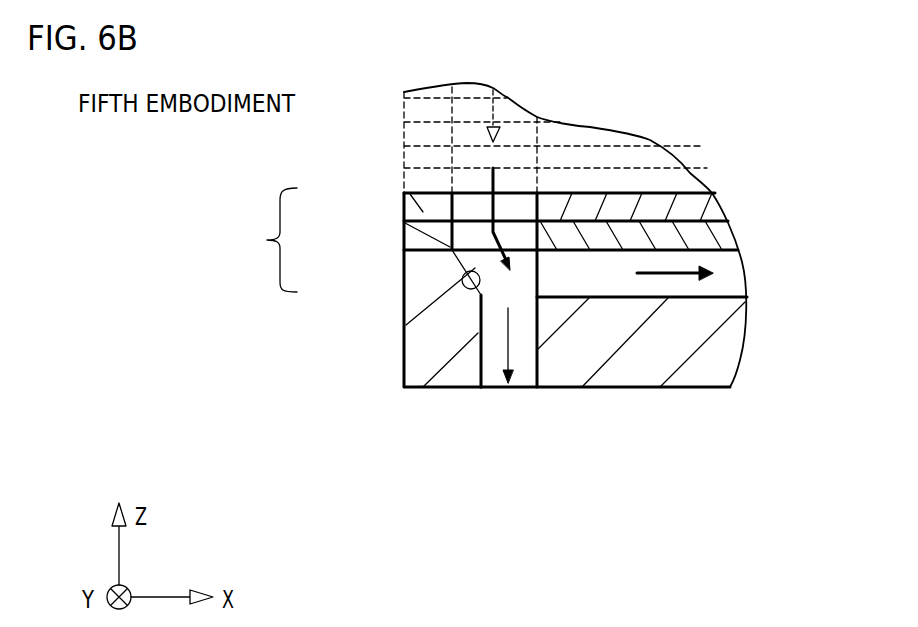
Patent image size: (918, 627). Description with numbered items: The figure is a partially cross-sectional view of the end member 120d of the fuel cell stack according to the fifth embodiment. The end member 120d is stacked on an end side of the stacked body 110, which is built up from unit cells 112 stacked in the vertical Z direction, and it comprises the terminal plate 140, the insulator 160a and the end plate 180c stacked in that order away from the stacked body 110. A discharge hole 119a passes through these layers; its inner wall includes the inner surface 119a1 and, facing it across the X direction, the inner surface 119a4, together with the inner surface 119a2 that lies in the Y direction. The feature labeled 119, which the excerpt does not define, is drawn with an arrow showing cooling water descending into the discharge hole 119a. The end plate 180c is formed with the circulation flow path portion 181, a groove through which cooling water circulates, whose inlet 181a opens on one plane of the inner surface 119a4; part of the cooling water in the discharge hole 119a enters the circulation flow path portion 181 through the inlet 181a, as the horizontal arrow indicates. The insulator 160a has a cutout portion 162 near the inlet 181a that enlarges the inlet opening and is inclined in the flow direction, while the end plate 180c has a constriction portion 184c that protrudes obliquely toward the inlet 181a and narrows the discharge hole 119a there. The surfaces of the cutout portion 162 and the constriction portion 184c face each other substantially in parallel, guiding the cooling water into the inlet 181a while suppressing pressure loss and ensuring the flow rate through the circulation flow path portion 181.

The stacked body 110 is at (578, 126).
The unit cell 112 is at (608, 185).
The liquid flow 119 is at (460, 108).
The discharge hole 119a is at (488, 389).
The inner surface 119a1 is at (487, 372).
The inner surface 119a2 is at (500, 278).
The inner surface 119a4 is at (543, 387).
The end member 120d is at (257, 240).
The terminal plate 140 is at (423, 208).
The insulator 160a is at (430, 241).
The cutout portion 162 is at (547, 217).
The end plate 180c is at (402, 276).
The circulation flow path portion 181 is at (725, 271).
The inlet 181a is at (537, 268).
The constriction portion 184c is at (462, 290).